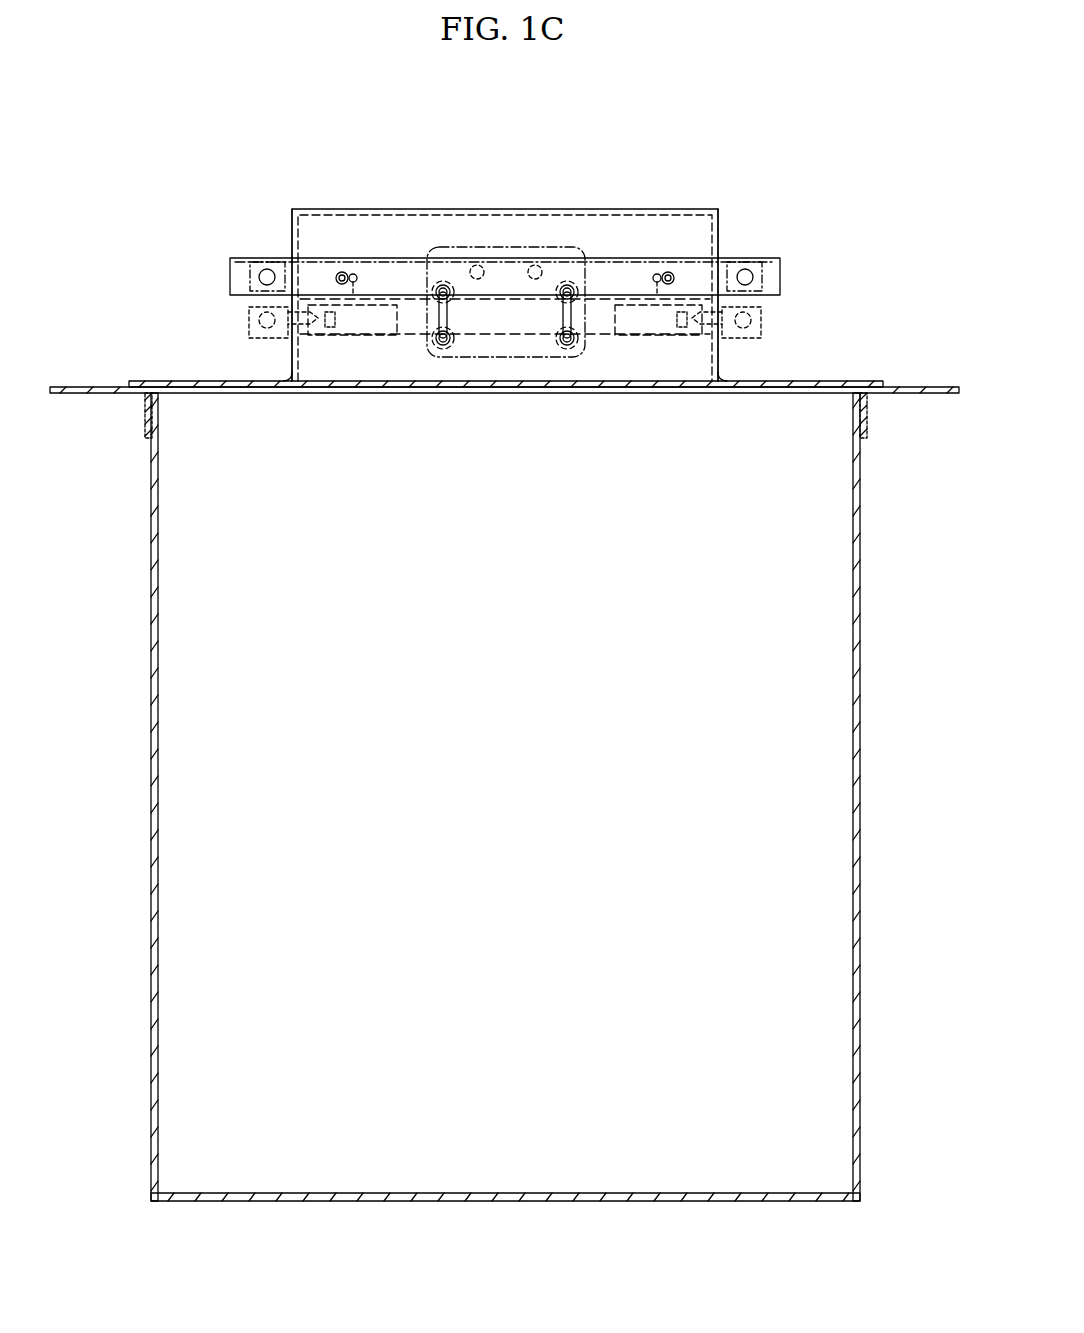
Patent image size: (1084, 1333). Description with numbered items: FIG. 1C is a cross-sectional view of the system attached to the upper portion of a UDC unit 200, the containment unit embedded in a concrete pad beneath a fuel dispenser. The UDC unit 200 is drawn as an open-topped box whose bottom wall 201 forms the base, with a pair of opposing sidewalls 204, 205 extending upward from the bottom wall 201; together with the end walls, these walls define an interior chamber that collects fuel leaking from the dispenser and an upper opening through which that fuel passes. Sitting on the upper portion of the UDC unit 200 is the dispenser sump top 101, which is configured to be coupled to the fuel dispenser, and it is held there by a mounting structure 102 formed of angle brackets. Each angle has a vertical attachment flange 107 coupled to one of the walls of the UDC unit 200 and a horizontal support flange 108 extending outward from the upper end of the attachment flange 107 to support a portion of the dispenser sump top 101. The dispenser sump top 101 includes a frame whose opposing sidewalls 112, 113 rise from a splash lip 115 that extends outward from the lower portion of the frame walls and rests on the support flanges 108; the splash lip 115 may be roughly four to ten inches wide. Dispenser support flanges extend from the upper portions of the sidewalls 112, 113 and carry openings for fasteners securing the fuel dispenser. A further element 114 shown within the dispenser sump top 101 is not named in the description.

The dispenser sump top 101 is at (580, 249).
The mounting structure 102 is at (876, 416).
The attachment flange 107 is at (145, 413).
The support flange 108 is at (77, 393).
The sidewall of the frame 112 is at (292, 230).
The sidewall of the frame 113 is at (718, 220).
The housing 114 is at (624, 222).
The splash lip 115 is at (201, 380).
The UDC unit 200 is at (506, 824).
The bottom wall 201 is at (607, 1203).
The sidewall 204 is at (151, 682).
The sidewall 205 is at (860, 682).